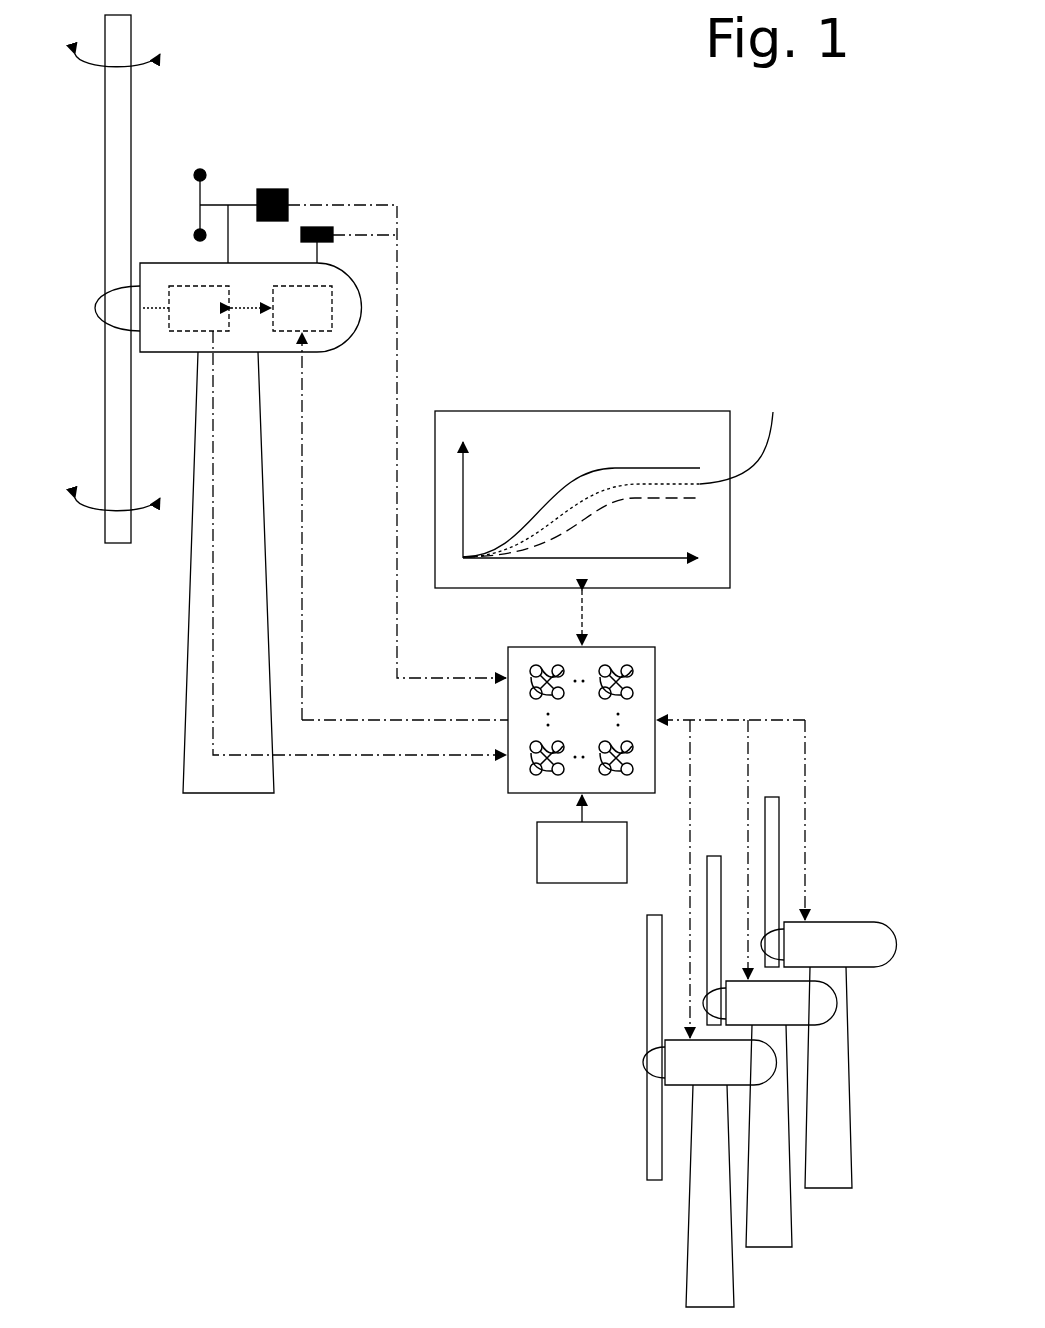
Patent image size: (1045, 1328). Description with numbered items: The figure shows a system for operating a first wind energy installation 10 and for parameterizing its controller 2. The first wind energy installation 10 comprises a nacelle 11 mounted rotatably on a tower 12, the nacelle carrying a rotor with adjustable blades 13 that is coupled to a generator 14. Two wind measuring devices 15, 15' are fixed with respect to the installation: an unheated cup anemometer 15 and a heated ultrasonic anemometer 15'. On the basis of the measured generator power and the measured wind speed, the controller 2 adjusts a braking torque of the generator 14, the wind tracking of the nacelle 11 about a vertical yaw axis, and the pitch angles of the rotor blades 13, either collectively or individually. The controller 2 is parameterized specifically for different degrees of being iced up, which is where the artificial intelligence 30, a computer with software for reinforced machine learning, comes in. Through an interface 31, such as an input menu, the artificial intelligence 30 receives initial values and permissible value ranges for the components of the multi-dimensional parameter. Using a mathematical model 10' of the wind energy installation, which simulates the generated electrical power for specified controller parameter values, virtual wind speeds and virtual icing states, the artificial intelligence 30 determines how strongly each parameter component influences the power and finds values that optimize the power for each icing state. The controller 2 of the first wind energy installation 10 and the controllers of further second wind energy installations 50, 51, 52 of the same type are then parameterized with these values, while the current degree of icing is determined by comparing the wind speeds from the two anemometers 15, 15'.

The controller 2 is at (311, 323).
The first wind energy installation 10 is at (279, 404).
The model 10' is at (616, 485).
The nacelle 11 is at (318, 353).
The tower 12 is at (263, 731).
The rotor blade 13 is at (103, 161).
The generator 14 is at (215, 323).
The wind measuring device 15 is at (299, 170).
The wind measuring device 15' is at (367, 202).
The artificial intelligence 30 is at (656, 677).
The interface 31 is at (597, 867).
The second wind energy installation 50 is at (735, 1079).
The second wind energy installation 51 is at (796, 1020).
The second wind energy installation 52 is at (854, 961).